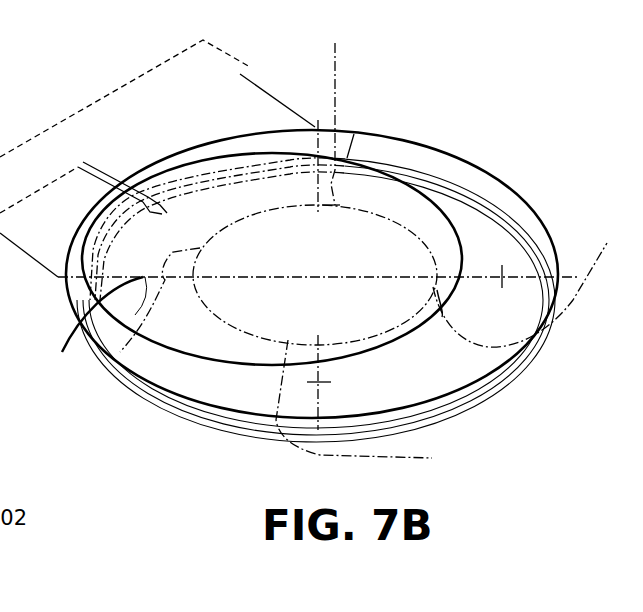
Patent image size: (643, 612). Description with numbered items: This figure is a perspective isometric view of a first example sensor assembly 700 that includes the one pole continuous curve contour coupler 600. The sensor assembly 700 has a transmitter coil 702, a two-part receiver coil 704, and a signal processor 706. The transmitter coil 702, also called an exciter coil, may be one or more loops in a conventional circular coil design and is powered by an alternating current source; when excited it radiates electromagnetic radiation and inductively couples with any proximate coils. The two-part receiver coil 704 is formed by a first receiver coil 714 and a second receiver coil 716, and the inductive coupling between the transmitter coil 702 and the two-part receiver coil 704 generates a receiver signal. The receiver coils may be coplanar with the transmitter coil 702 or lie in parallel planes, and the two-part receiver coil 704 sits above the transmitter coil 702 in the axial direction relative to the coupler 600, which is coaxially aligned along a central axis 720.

The sensor assembly 700 is at (549, 93).
The transmitter coil 702 is at (536, 371).
The two-part receiver coil 704 is at (207, 398).
The one pole continuous curve contour coupler 600 is at (340, 157).
The signal processor 706 is at (110, 113).
The first receiver coil 714 is at (316, 130).
The second receiver coil 716 is at (508, 277).
The central axis 720 is at (229, 228).